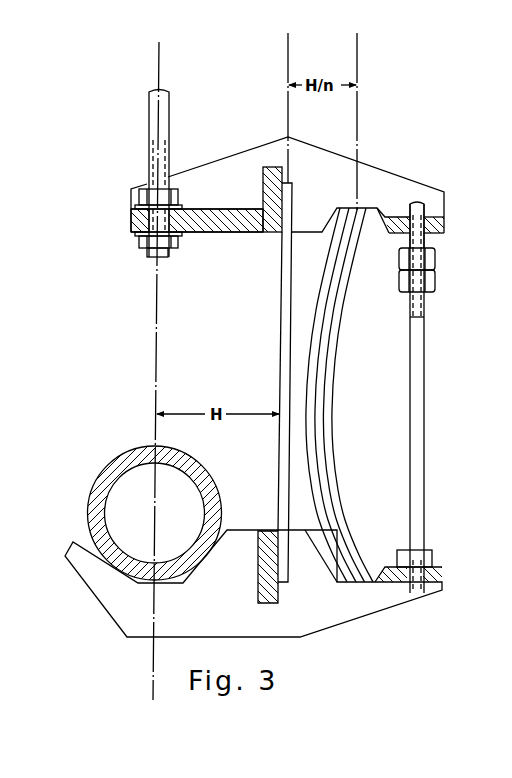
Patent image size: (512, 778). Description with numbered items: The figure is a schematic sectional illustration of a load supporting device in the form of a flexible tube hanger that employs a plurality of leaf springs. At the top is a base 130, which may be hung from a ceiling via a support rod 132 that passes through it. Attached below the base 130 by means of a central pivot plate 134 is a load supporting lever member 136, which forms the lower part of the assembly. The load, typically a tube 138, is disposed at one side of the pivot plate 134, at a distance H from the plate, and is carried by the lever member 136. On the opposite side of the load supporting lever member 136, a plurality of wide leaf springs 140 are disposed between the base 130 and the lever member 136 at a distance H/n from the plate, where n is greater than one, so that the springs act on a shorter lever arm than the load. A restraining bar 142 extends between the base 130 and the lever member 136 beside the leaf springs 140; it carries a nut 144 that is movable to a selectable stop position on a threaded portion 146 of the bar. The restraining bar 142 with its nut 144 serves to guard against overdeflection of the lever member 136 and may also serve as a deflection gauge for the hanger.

The base 130 is at (236, 163).
The support rod 132 is at (158, 139).
The central pivot plate 134 is at (280, 340).
The load supporting lever member 136 is at (130, 603).
The tube 138 is at (118, 455).
The wide leaf springs 140 is at (310, 383).
The restraining bar 142 is at (418, 347).
The nut 144 is at (428, 258).
The threaded portion 146 is at (419, 240).